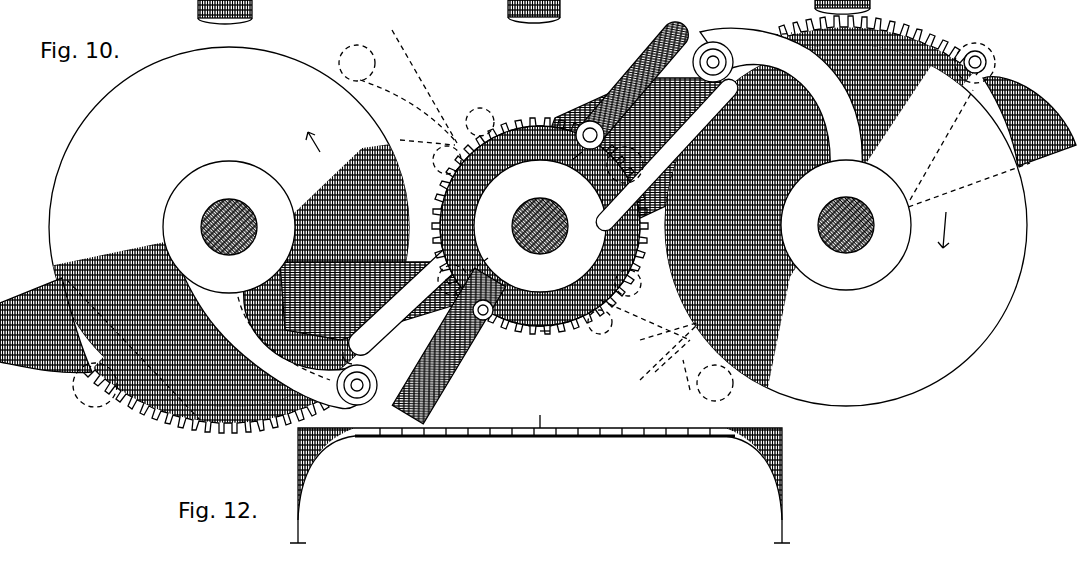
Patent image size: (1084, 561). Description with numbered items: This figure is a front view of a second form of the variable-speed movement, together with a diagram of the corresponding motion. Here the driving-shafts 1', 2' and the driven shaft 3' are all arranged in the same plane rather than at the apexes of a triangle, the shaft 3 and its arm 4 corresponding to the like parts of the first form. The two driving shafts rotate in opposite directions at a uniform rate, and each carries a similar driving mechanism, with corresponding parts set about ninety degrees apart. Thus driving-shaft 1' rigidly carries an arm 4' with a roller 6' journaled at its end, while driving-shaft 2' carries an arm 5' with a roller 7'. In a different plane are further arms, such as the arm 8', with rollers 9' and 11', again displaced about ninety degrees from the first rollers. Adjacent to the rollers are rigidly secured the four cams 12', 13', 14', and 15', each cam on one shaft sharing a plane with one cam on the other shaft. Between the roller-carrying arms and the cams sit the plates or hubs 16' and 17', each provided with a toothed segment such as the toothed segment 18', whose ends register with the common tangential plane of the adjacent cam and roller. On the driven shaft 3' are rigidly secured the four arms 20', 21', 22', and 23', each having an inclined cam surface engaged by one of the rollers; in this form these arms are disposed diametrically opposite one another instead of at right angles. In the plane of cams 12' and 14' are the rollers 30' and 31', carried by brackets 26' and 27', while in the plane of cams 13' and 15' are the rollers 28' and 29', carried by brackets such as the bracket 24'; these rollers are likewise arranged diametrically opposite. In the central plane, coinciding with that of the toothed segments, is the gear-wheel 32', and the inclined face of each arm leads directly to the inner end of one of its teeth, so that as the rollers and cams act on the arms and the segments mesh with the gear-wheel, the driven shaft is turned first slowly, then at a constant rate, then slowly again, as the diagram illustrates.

The plate or hub 17' is at (230, 243).
The cam 15' is at (229, 209).
The roller 11' is at (94, 392).
The cam 12' is at (537, 197).
The bracket 26' is at (494, 280).
The arm 21' is at (522, 292).
The cam 14' is at (376, 371).
The arm 4' is at (269, 329).
The roller 6' is at (360, 391).
The driving-shaft 1' is at (229, 146).
The plate or hub 16' is at (845, 223).
The toothed segment 18' is at (856, 43).
The cam 13' is at (878, 243).
The arm 5' is at (781, 99).
The roller 7' is at (713, 54).
The driving-shaft 2' is at (846, 225).
The driven shaft 3' is at (540, 226).
The arm 23' is at (541, 144).
The roller 31' is at (508, 137).
The arm 20' is at (567, 132).
The bracket 24' is at (608, 179).
The roller 28' is at (564, 195).
The bracket 27' is at (562, 168).
The roller 29' is at (440, 272).
The arm 22' is at (546, 346).
The roller 30' is at (495, 327).
The gear-wheel 32' is at (549, 343).
The roller 9' is at (850, 219).
The arm 8' is at (968, 41).
The shaft 3 is at (539, 11).
The arm 4 is at (600, 7).